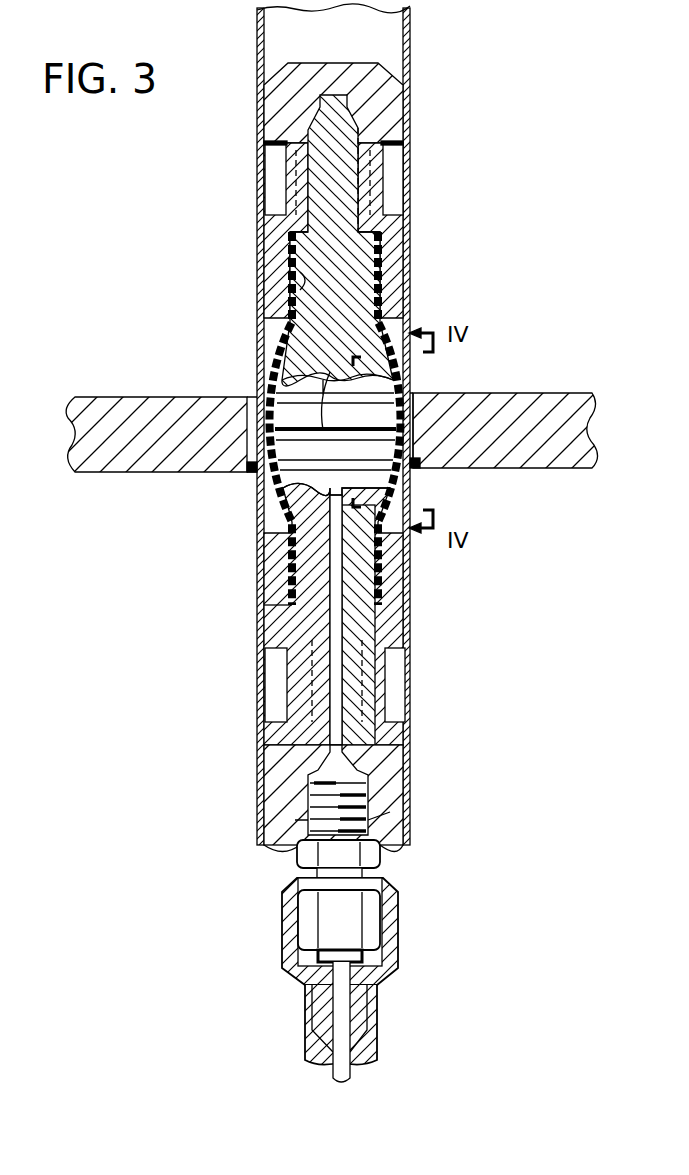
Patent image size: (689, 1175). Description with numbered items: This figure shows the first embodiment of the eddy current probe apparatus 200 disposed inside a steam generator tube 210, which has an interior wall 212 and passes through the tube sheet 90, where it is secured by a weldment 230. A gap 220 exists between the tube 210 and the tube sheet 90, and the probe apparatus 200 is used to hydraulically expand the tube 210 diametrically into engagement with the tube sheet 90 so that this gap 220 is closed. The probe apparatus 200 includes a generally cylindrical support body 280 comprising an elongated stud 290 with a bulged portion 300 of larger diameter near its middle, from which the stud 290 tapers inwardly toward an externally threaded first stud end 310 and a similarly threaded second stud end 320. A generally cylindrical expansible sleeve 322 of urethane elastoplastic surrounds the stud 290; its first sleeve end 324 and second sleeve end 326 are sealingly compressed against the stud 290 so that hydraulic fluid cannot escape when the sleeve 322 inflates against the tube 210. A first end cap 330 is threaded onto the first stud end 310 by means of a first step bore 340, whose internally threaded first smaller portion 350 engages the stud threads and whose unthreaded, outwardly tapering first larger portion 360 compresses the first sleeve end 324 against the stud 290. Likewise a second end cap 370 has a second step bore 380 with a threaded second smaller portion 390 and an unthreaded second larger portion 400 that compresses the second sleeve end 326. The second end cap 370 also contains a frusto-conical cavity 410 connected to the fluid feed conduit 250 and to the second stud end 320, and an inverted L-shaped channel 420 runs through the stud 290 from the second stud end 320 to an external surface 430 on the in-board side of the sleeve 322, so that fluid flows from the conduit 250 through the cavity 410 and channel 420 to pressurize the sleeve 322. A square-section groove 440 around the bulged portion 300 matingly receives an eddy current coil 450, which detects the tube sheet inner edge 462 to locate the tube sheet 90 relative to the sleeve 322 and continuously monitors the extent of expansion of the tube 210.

The tube sheet 90 is at (566, 402).
The eddy current probe apparatus 200 is at (420, 866).
The steam generator tube 210 is at (409, 57).
The interior wall 212 is at (403, 32).
The gap 220 is at (413, 393).
The weldment 230 is at (414, 469).
The fluid feed conduit 250 is at (346, 1072).
The support body 280 is at (300, 247).
The stud 290 is at (345, 295).
The bulged portion 300 is at (285, 431).
The first stud end 310 is at (370, 192).
The second stud end 320 is at (350, 700).
The expansible sleeve 322 is at (291, 536).
The first sleeve end 324 is at (381, 258).
The second sleeve end 326 is at (383, 603).
The first end cap 330 is at (294, 98).
The first step bore 340 is at (306, 156).
The first smaller portion 350 is at (300, 190).
The first larger portion 360 is at (303, 283).
The second end cap 370 is at (386, 750).
The second step bore 380 is at (356, 676).
The second smaller portion 390 is at (300, 680).
The second larger portion 400 is at (296, 601).
The frusto-conical cavity 410 is at (368, 798).
The channel 420 is at (296, 568).
The external surface 430 is at (293, 516).
The groove 440 is at (338, 392).
The eddy current coil 450 is at (416, 443).
The tube sheet inner edge 462 is at (262, 398).